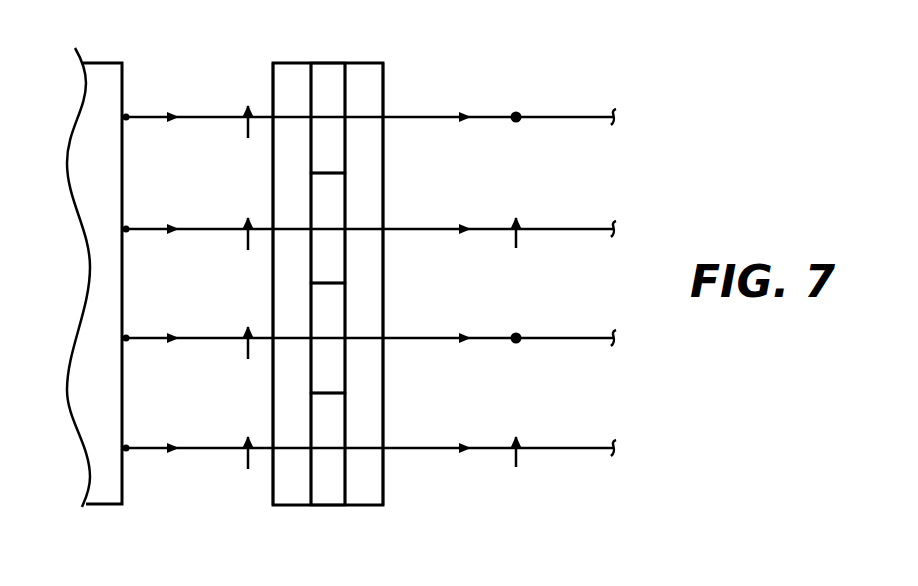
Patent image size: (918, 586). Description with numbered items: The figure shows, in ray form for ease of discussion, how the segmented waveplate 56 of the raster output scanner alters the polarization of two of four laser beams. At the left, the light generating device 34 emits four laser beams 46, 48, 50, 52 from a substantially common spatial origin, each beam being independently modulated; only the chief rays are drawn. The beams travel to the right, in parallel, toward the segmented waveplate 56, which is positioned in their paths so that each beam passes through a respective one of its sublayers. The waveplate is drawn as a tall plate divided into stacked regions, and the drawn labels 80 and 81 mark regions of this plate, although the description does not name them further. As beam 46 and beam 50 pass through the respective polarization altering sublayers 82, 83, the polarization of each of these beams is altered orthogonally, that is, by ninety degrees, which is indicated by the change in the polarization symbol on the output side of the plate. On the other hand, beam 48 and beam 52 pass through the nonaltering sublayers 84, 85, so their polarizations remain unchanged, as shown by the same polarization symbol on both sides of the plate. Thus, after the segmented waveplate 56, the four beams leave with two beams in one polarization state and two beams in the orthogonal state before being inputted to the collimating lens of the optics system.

The light generating device 34 is at (98, 508).
The laser beam 46 is at (141, 99).
The laser beam 48 is at (141, 211).
The laser beam 50 is at (141, 320).
The laser beam 52 is at (141, 430).
The segmented waveplate 56 is at (326, 38).
The first polarization rotating segment 80 is at (333, 83).
The third polarization rotating segment 81 is at (335, 304).
The polarization altering sublayer 82 is at (335, 191).
The polarization altering sublayer 83 is at (337, 410).
The nonaltering sublayer 84 is at (290, 508).
The nonaltering sublayer 85 is at (365, 508).